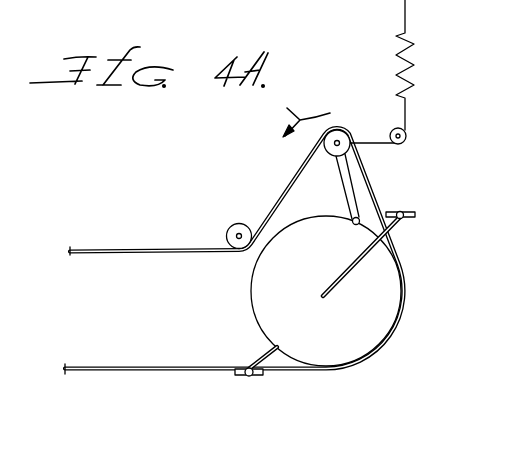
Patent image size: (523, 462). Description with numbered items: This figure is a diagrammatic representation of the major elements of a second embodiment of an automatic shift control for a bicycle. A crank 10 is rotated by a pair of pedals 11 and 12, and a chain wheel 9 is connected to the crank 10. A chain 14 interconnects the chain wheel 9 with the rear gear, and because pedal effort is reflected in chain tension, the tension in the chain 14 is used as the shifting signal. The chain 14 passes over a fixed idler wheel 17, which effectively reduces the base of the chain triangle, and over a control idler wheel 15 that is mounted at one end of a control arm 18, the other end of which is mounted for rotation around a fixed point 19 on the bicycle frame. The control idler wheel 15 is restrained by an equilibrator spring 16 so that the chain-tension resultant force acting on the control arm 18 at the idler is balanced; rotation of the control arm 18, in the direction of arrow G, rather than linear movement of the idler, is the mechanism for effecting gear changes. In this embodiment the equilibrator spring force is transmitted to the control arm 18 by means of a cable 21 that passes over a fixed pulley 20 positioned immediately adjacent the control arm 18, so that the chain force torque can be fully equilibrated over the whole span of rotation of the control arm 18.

The chain wheel 9 is at (370, 338).
The crank 10 is at (345, 270).
The pedal 11 is at (410, 219).
The pedal 12 is at (241, 376).
The chain 14 is at (148, 250).
The control idler wheel 15 is at (343, 132).
The equilibrator spring 16 is at (412, 67).
The fixed idler wheel 17 is at (238, 223).
The control arm 18 is at (345, 180).
The fixed point 19 is at (362, 219).
The fixed pulley 20 is at (406, 137).
The cable 21 is at (378, 148).
The arrow G is at (296, 117).